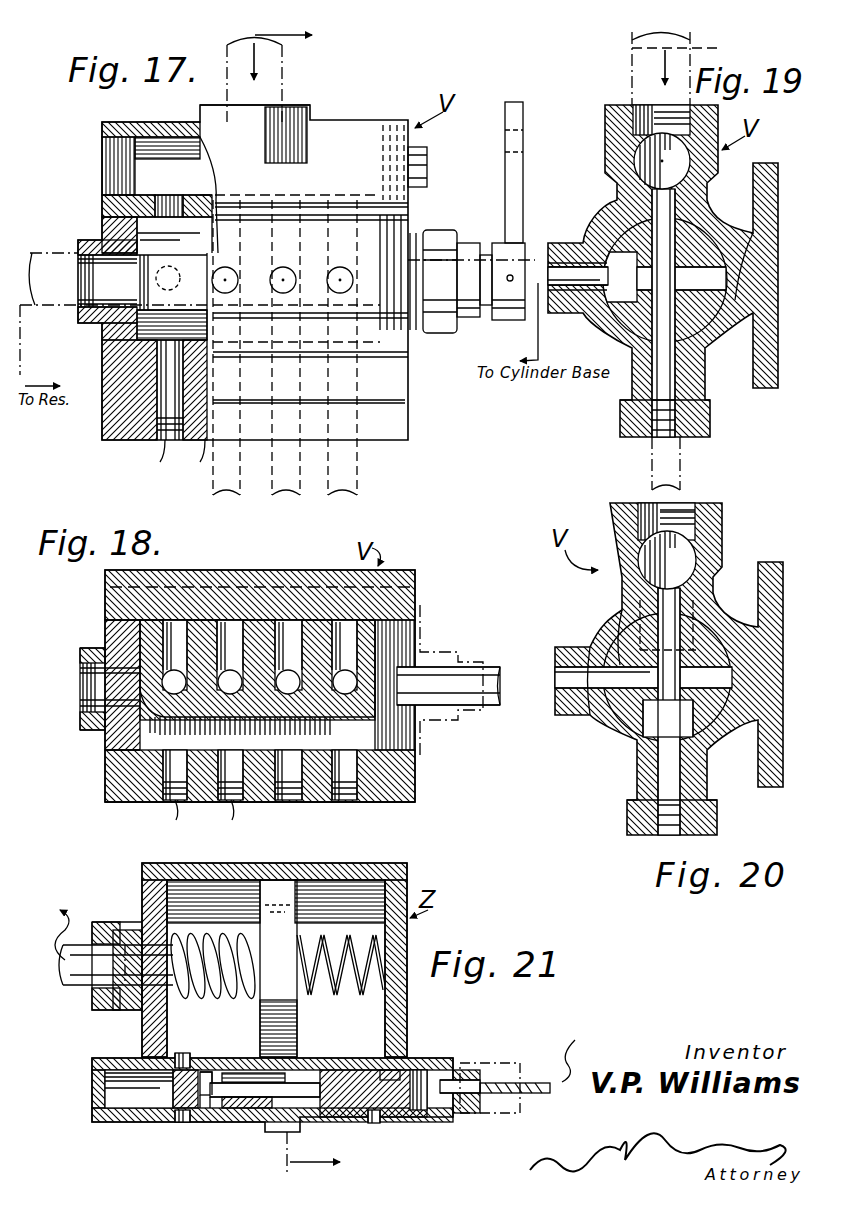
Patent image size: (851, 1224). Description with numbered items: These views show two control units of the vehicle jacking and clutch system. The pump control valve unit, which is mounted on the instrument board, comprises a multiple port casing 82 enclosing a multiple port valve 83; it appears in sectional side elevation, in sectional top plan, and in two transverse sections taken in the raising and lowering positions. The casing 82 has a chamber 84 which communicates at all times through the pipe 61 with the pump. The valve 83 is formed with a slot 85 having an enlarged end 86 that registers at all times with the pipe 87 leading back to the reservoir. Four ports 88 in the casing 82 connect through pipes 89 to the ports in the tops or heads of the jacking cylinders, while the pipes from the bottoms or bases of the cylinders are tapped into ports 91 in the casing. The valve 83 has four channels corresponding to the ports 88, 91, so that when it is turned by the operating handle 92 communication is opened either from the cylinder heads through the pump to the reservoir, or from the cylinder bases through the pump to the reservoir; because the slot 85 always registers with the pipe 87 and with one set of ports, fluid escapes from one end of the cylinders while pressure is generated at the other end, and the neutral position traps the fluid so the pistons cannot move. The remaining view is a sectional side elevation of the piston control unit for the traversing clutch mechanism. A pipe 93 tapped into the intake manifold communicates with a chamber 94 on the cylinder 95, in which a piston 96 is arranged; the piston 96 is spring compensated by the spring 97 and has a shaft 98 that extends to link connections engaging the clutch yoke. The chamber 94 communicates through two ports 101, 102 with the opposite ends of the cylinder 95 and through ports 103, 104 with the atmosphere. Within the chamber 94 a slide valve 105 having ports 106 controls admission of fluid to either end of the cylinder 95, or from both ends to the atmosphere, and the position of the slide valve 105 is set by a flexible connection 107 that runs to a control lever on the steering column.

In FIG. 17, the pipe 61 is at (303, 82).
In FIG. 19, the pipe 61 is at (622, 78).
In FIG. 20, the pipe 61 is at (690, 524).
In FIG. 17, the multiple port casing 82 is at (412, 382).
In FIG. 19, the multiple port casing 82 is at (736, 216).
In FIG. 20, the multiple port casing 82 is at (606, 738).
In FIG. 18, the multiple port casing 82 is at (415, 580).
In FIG. 17, the multiple port valve 83 is at (145, 242).
In FIG. 20, the multiple port valve 83 is at (620, 627).
In FIG. 18, the multiple port valve 83 is at (415, 780).
In FIG. 17, the chamber 84 is at (343, 140).
In FIG. 19, the chamber 84 is at (655, 168).
In FIG. 20, the chamber 84 is at (680, 568).
In FIG. 17, the slot 85 is at (147, 352).
In FIG. 19, the slot 85 is at (625, 320).
In FIG. 20, the slot 85 is at (660, 720).
In FIG. 18, the slot 85 is at (428, 818).
In FIG. 17, the enlarged end 86 is at (147, 290).
In FIG. 19, the enlarged end 86 is at (714, 348).
In FIG. 20, the enlarged end 86 is at (588, 645).
In FIG. 18, the enlarged end 86 is at (162, 732).
In FIG. 17, the pipe 87 is at (56, 258).
In FIG. 18, the pipe 87 is at (88, 702).
In FIG. 17, the ports 88 is at (205, 442).
In FIG. 19, the ports 88 is at (660, 395).
In FIG. 20, the ports 88 is at (668, 788).
In FIG. 18, the ports 88 is at (180, 812).
In FIG. 17, the pipes 89 is at (290, 500).
In FIG. 19, the pipes 89 is at (650, 468).
In FIG. 17, the ports 91 is at (350, 282).
In FIG. 19, the ports 91 is at (552, 270).
In FIG. 20, the ports 91 is at (565, 682).
In FIG. 17, the operating handle 92 is at (523, 148).
In FIG. 21, the pipe 93 is at (290, 1142).
In FIG. 21, the chamber 94 is at (142, 1100).
In FIG. 21, the cylinder 95 is at (408, 1028).
In FIG. 21, the piston 96 is at (308, 1014).
In FIG. 21, the spring 97 is at (232, 1000).
In FIG. 21, the shaft 98 is at (80, 985).
In FIG. 21, the port 101 is at (186, 1053).
In FIG. 21, the port 102 is at (380, 1052).
In FIG. 21, the port 103 is at (183, 1124).
In FIG. 21, the port 104 is at (374, 1123).
In FIG. 21, the slide valve 105 is at (205, 1125).
In FIG. 21, the ports 106 is at (262, 1108).
In FIG. 21, the flexible connection 107 is at (540, 1071).